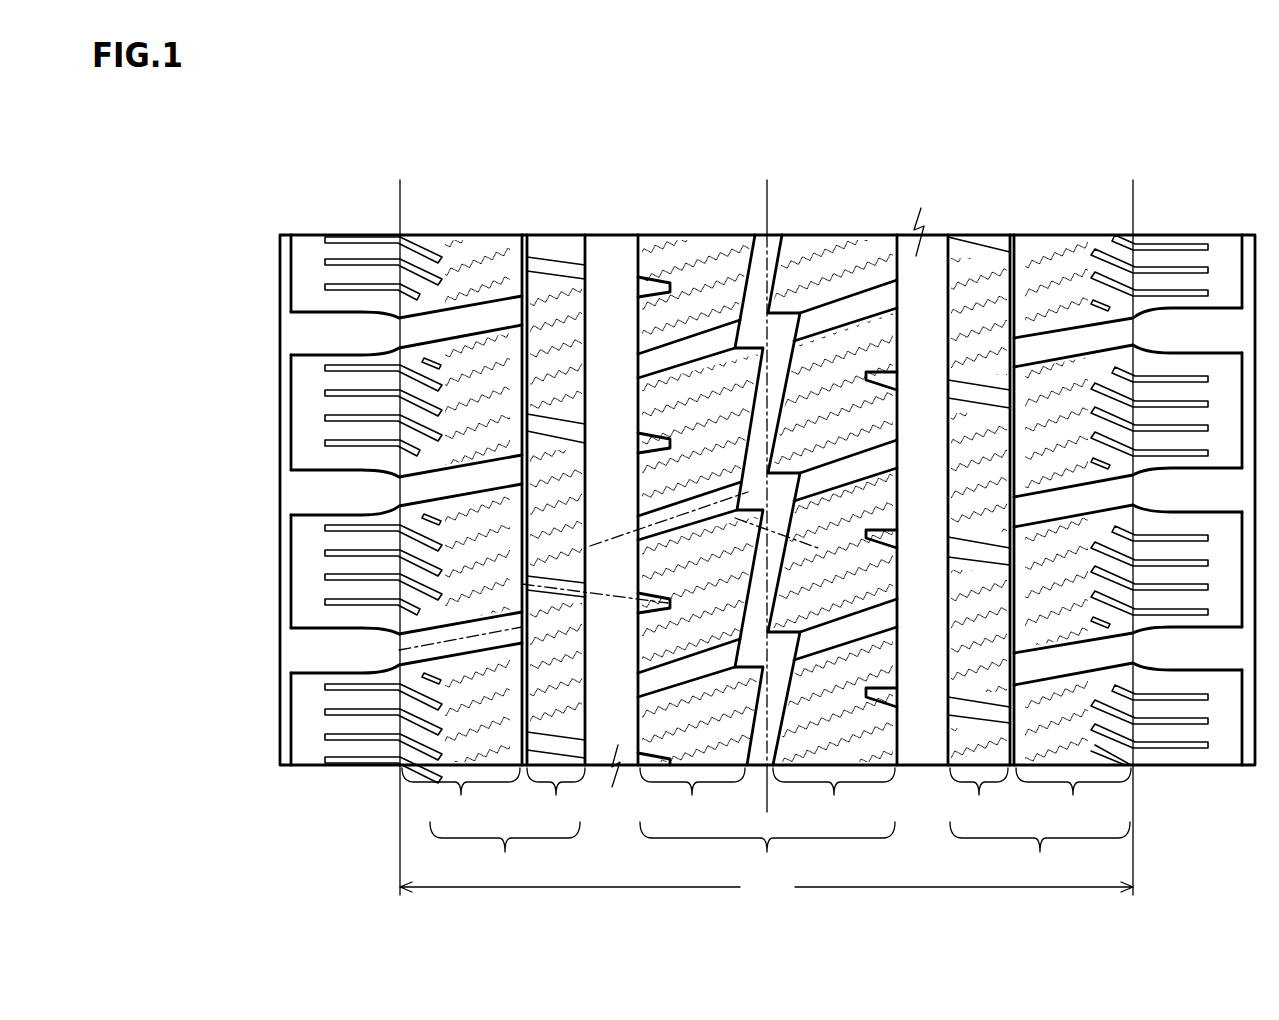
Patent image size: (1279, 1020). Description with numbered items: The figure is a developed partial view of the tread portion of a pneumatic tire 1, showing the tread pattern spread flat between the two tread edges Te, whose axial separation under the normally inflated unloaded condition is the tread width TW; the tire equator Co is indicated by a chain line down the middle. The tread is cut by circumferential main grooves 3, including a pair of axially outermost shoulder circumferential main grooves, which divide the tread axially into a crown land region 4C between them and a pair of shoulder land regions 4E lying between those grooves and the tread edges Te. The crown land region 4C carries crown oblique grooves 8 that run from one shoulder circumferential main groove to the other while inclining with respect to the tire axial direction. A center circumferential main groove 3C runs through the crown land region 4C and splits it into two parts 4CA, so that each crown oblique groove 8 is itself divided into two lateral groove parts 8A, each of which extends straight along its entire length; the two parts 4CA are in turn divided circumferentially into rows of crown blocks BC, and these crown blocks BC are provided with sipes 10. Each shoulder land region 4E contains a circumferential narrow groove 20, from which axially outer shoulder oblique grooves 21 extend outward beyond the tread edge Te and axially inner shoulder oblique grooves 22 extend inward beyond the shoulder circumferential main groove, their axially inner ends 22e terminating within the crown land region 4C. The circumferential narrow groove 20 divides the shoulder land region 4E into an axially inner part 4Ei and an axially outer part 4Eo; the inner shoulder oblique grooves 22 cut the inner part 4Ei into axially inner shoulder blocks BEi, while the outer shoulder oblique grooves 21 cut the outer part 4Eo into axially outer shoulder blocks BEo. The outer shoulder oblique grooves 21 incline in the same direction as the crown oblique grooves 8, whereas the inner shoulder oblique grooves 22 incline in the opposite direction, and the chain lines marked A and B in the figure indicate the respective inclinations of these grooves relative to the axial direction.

The pneumatic tire 1 is at (767, 433).
The circumferential main grooves 3 is at (612, 270).
The center circumferential main groove 3C is at (772, 250).
The crown oblique grooves 8 is at (832, 126).
The lateral groove parts 8A is at (703, 345).
The sipes 10 is at (868, 256).
The circumferential narrow groove 20 is at (525, 255).
The axially outer shoulder oblique grooves 21 is at (455, 318).
The axially inner shoulder oblique grooves 22 is at (555, 270).
The axially inner ends 22e is at (672, 273).
The tread edges Te is at (399, 206).
The tire equator Co is at (768, 483).
The axially outer shoulder blocks BEo is at (503, 404).
The axially inner shoulder blocks BEi is at (532, 372).
The crown blocks BC is at (676, 430).
The angle A reference line A is at (695, 527).
The angle B reference line B is at (539, 623).
The axially outer part 4Eo is at (766, 801).
The axially inner part 4Ei is at (767, 801).
The shoulder land regions 4E is at (780, 851).
The parts of crown land region 4CA is at (767, 798).
The crown land region 4C is at (767, 851).
The tread width TW is at (766, 887).